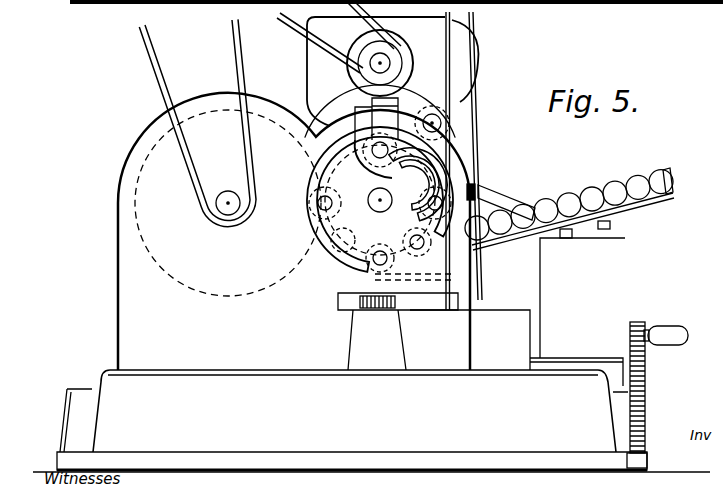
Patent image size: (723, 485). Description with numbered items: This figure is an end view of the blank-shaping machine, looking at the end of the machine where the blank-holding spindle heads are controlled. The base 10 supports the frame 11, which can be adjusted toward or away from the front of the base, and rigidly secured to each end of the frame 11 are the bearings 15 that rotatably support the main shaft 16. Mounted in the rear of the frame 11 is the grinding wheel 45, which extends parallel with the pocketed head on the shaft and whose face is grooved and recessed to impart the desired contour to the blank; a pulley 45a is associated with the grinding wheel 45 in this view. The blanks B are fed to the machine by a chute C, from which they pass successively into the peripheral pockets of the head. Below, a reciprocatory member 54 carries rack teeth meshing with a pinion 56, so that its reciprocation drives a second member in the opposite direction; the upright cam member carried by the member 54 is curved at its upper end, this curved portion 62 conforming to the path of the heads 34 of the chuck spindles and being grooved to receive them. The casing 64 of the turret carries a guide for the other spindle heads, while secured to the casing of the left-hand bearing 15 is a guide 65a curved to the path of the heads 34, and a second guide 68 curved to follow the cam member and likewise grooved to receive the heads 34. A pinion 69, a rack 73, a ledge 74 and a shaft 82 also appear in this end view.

The base 10 is at (390, 411).
The frame 11 is at (517, 304).
The bearings 15 is at (457, 180).
The main shaft 16 is at (377, 205).
The head 34 is at (384, 254).
The grinding wheel 45 is at (153, 235).
The pulley 45a is at (432, 51).
The reciprocatory member 54 is at (397, 305).
The pinion 56 is at (363, 297).
The curved portion 62 is at (392, 143).
The casing 64 is at (673, 193).
The guide 65a is at (316, 168).
The second guide 68 is at (398, 180).
The pinion 69 is at (443, 127).
The rack 73 is at (634, 388).
The ledge 74 is at (592, 366).
The shaft 82 is at (703, 59).
The blanks B is at (632, 183).
The chute C is at (638, 203).